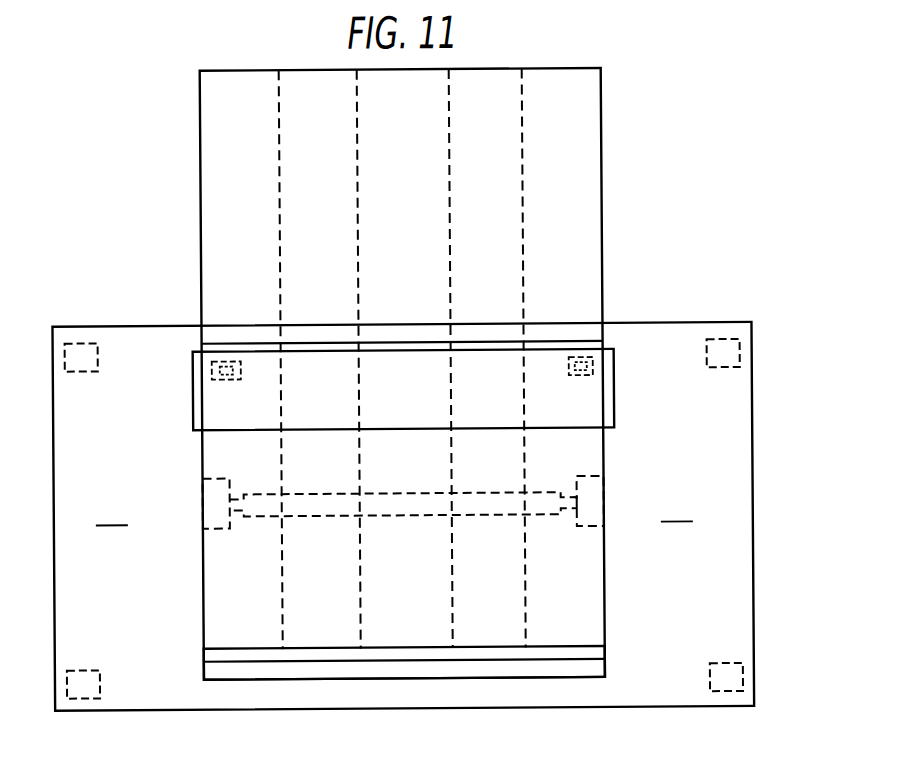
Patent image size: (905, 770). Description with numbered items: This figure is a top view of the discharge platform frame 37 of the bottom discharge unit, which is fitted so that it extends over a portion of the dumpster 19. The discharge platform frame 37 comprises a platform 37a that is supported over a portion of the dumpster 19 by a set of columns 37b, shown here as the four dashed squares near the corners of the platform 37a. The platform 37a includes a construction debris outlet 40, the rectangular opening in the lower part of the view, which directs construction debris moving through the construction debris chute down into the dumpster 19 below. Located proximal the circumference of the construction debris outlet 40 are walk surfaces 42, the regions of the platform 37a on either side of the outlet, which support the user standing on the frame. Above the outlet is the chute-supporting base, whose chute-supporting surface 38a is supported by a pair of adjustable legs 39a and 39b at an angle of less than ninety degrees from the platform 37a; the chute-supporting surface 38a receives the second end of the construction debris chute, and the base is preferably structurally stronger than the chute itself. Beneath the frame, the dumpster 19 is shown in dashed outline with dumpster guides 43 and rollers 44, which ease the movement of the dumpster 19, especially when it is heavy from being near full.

The dumpster 19 is at (603, 154).
The discharge platform frame 37 is at (425, 490).
The platform 37a is at (752, 512).
The columns 37b is at (81, 340).
The chute-supporting surface 38a is at (560, 429).
The adjustable leg 39a is at (593, 366).
The adjustable leg 39b is at (212, 367).
The construction debris outlet 40 is at (603, 578).
The walk surfaces 42 is at (394, 510).
The dumpster guides 43 is at (318, 618).
The rollers 44 is at (261, 528).